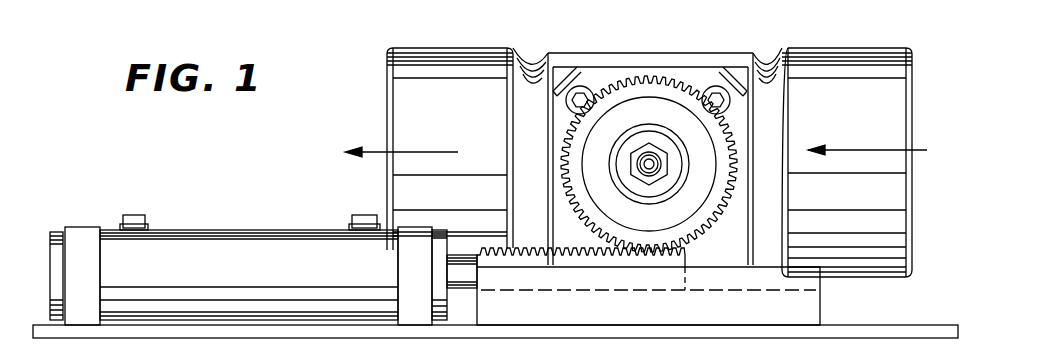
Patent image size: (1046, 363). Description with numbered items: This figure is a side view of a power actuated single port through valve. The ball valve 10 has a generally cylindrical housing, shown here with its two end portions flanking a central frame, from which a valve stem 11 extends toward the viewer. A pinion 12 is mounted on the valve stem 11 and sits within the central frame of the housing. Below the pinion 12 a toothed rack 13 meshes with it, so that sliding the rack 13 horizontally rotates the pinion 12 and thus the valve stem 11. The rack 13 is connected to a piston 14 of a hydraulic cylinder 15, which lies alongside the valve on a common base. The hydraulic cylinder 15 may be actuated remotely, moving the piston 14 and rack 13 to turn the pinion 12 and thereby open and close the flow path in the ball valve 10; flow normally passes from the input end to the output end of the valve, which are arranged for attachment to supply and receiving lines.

The ball valve 10 is at (884, 65).
The valve stem 11 is at (656, 170).
The pinion 12 is at (732, 152).
The rack 13 is at (637, 262).
The piston 14 is at (462, 278).
The hydraulic cylinder 15 is at (245, 276).